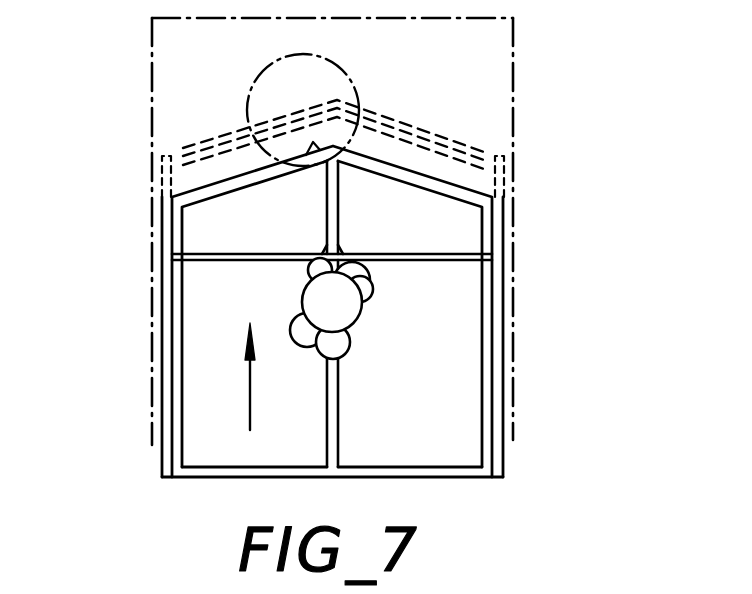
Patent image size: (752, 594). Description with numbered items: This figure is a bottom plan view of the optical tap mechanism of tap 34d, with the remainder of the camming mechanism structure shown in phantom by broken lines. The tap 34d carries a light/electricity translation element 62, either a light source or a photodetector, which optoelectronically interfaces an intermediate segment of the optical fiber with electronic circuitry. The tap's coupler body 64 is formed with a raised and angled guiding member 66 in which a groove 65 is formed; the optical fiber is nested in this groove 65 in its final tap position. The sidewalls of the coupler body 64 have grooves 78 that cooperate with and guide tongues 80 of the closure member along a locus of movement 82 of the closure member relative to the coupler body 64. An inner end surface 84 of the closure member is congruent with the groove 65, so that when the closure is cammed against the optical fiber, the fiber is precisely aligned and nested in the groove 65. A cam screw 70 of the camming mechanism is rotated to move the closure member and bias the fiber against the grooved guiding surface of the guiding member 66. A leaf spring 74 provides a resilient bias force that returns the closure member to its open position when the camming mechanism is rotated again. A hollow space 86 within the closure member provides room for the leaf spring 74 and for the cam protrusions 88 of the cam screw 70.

The tap 34d is at (536, 460).
The light/electricity translation element 62 is at (250, 87).
The coupler body 64 is at (152, 440).
The groove 65 is at (410, 190).
The guiding member 66 is at (407, 197).
The cam screw 70 is at (327, 307).
The leaf spring 74 is at (228, 257).
The grooves 78 is at (160, 155).
The tongues 80 is at (168, 228).
The locus of movement 82 is at (251, 386).
The inner end surface 84 is at (313, 147).
The hollow space 86 is at (399, 399).
The cam protrusions 88 is at (368, 283).